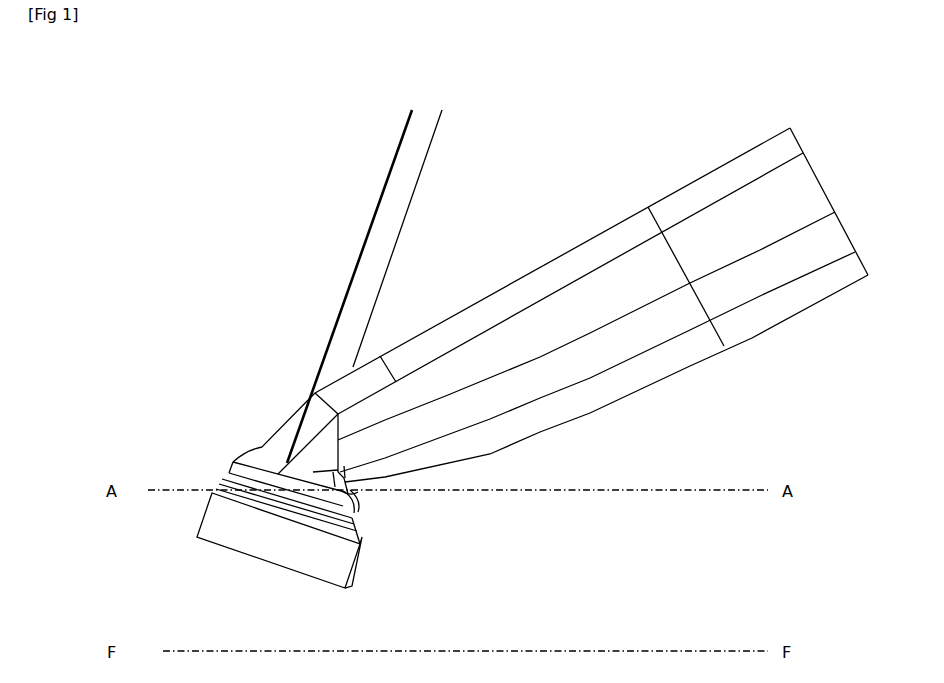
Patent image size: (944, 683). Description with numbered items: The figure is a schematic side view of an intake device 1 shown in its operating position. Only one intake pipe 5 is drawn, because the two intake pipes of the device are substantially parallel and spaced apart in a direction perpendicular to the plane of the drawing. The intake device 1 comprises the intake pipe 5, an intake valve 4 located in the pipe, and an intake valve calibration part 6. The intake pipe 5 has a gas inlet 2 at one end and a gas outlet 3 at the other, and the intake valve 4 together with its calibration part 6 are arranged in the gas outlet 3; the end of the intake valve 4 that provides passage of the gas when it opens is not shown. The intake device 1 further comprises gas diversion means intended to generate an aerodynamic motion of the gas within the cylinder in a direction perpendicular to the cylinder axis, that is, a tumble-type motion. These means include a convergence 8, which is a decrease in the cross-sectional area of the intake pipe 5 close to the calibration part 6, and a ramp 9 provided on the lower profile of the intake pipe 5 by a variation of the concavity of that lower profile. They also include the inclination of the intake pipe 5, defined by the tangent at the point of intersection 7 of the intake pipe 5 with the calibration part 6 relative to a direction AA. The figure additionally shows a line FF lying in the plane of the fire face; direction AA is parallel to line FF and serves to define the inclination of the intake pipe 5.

The intake device 1 is at (282, 187).
The gas inlet 2 is at (728, 173).
The gas outlet 3 is at (238, 553).
The intake valve 4 is at (345, 345).
The intake pipe 5 is at (537, 290).
The intake valve calibration part 6 is at (222, 490).
The point of intersection 7 is at (360, 492).
The convergence 8 is at (275, 420).
The ramp 9 is at (372, 476).